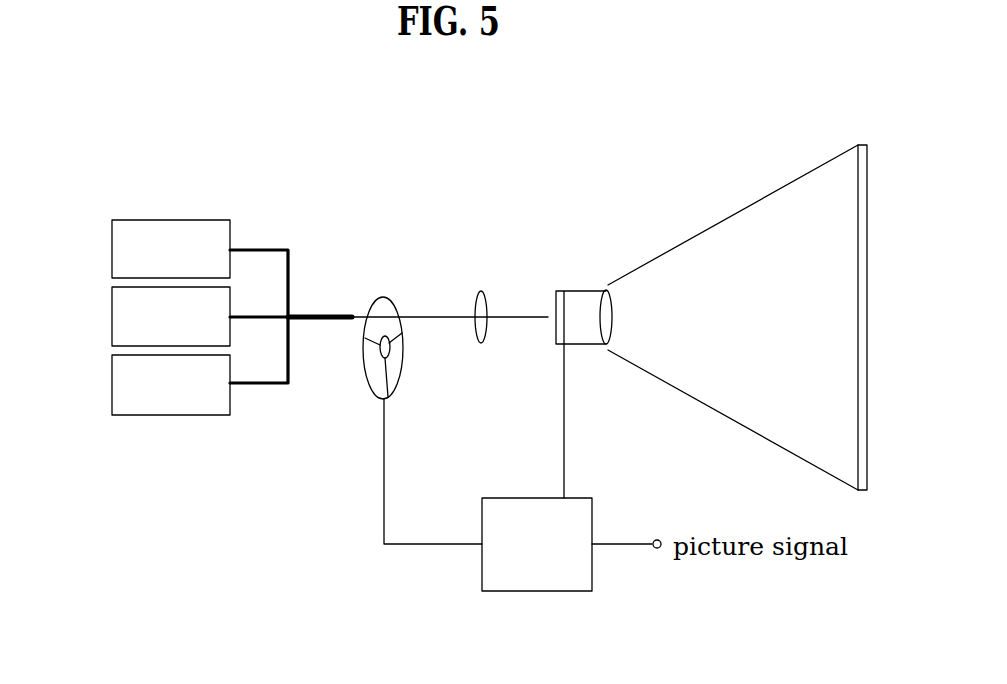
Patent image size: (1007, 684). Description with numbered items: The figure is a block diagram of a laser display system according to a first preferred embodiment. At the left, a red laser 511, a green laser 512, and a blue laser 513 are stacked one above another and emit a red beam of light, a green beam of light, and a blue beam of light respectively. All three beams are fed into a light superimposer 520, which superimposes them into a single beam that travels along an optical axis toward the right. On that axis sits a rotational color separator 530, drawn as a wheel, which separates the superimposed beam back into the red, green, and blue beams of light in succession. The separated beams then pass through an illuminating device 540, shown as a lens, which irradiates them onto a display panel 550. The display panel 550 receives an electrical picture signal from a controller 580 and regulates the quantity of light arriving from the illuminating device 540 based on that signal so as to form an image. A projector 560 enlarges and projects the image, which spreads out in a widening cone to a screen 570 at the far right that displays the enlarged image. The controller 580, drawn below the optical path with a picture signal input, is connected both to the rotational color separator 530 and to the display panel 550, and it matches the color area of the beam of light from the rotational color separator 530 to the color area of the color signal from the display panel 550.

The red laser 511 is at (122, 249).
The green laser 512 is at (122, 315).
The blue laser 513 is at (122, 384).
The light superimposer 520 is at (277, 248).
The rotational color separator 530 is at (384, 297).
The illuminating device 540 is at (481, 343).
The display panel 550 is at (556, 291).
The projector 560 is at (583, 338).
The screen 570 is at (858, 389).
The controller 580 is at (542, 576).